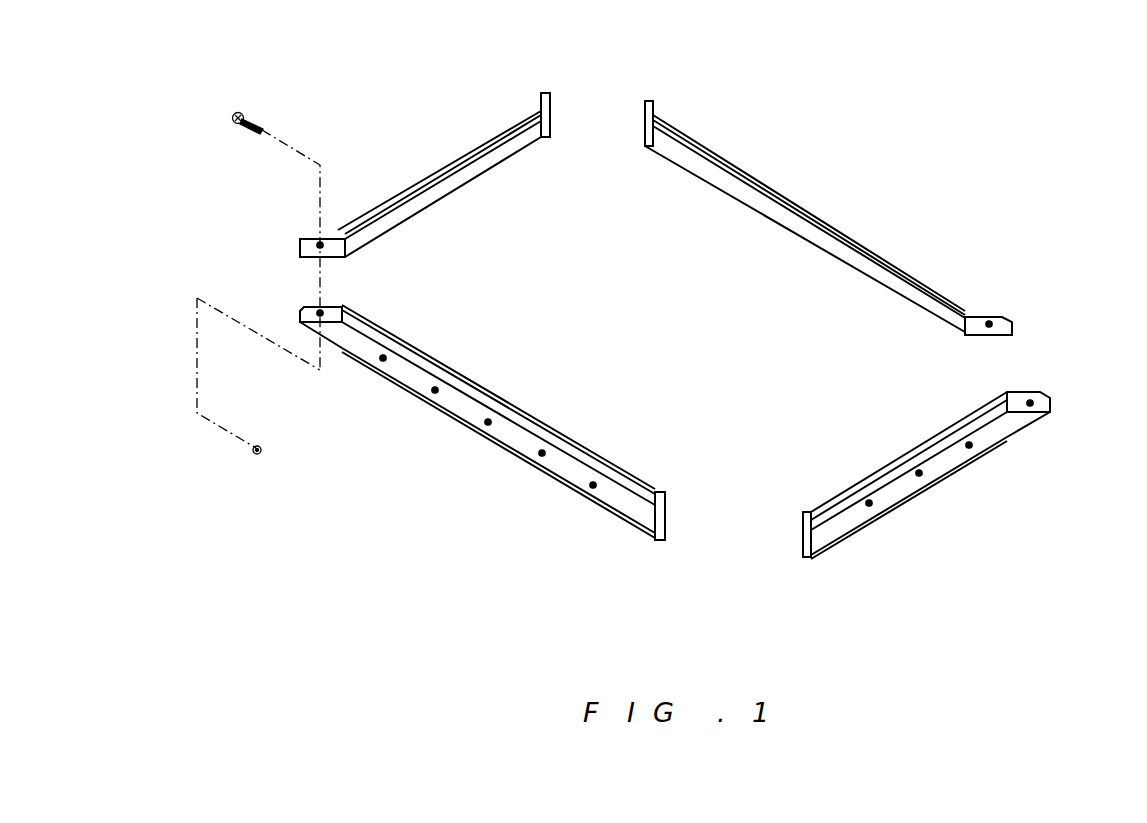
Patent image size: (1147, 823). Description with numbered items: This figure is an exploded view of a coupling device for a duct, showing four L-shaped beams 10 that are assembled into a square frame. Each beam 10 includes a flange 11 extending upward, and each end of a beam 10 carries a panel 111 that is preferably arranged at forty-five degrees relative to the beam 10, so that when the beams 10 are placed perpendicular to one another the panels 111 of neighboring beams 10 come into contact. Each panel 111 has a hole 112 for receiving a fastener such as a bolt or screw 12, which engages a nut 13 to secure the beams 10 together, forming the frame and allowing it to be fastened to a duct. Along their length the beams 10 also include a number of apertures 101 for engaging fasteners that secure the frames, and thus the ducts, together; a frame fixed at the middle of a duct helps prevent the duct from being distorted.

The L-shaped beam 10 is at (689, 330).
The flange 11 is at (689, 330).
The aperture 101 is at (541, 455).
The panel 111 is at (689, 320).
The hole 112 is at (990, 322).
The screw 12 is at (240, 112).
The nut 13 is at (262, 450).